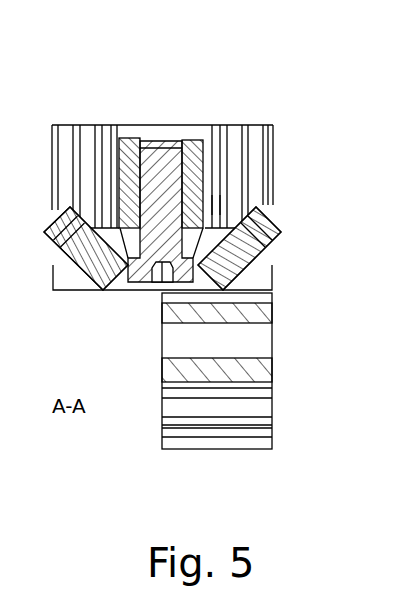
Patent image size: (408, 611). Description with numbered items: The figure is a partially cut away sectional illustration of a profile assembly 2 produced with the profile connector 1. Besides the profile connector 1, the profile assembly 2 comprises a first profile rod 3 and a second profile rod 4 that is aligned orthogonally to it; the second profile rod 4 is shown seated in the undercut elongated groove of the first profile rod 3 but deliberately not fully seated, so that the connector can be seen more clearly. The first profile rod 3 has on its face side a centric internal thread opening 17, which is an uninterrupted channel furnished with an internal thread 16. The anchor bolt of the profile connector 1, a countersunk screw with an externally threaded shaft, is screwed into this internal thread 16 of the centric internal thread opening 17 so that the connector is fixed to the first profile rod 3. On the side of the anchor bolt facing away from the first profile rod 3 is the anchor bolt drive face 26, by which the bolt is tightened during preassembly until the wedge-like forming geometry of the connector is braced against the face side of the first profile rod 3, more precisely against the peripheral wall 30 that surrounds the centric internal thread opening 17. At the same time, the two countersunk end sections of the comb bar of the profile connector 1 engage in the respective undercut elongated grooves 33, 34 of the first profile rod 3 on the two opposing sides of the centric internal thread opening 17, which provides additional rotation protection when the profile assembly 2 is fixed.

The profile connector 1 is at (68, 292).
The profile assembly 2 is at (289, 249).
The first profile rod 3 is at (141, 146).
The second profile rod 4 is at (229, 441).
The internal thread 16 is at (198, 150).
The centric internal thread opening 17 is at (127, 138).
The anchor bolt drive face 26 is at (170, 287).
The peripheral wall 30 is at (216, 206).
The undercut elongated groove 33 is at (91, 127).
The undercut elongated groove 34 is at (231, 131).